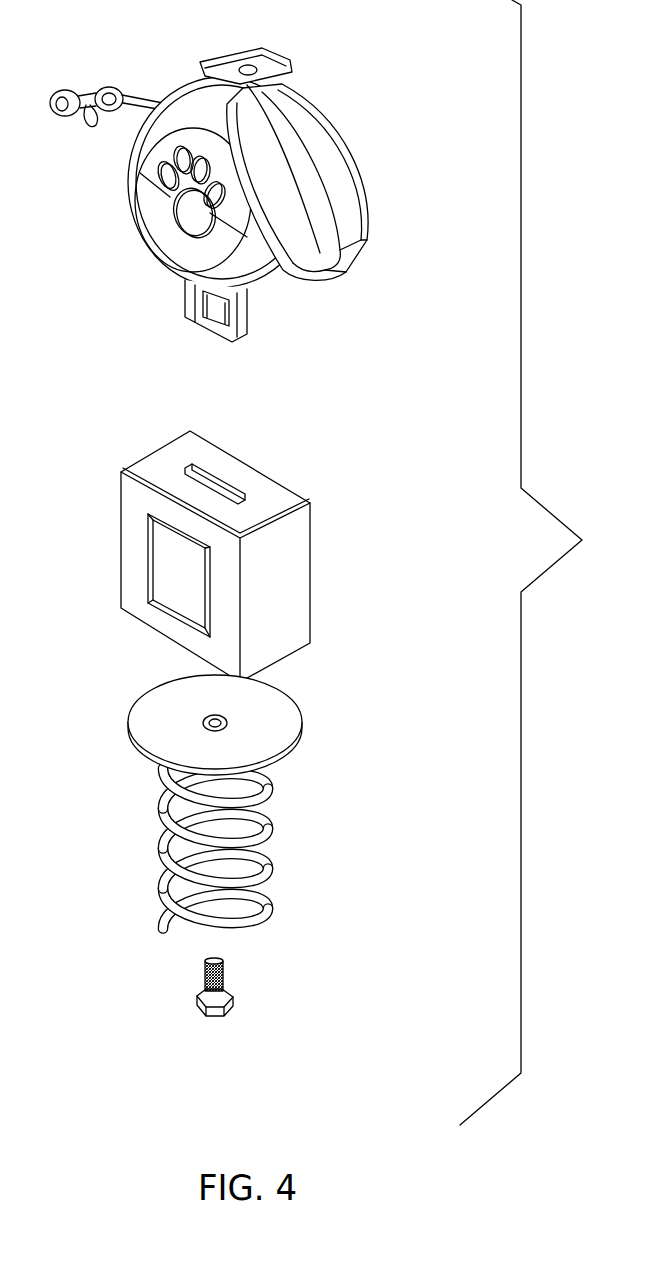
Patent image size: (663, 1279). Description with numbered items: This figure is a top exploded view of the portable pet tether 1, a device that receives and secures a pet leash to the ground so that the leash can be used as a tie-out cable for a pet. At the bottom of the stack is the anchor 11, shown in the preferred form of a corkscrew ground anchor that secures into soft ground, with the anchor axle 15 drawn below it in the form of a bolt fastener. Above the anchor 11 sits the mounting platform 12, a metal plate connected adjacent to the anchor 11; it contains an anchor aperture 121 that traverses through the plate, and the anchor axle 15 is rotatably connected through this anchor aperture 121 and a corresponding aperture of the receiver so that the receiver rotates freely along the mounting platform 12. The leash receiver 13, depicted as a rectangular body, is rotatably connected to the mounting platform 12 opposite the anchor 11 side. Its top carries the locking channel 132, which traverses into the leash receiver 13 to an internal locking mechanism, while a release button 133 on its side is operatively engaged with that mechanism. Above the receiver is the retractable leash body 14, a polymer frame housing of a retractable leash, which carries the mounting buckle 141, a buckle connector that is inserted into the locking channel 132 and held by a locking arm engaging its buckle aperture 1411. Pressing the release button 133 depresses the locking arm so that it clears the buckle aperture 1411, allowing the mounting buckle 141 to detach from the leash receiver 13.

The portable pet tether 1 is at (536, 562).
The anchor 11 is at (293, 827).
The mounting platform 12 is at (128, 750).
The anchor aperture 121 is at (218, 715).
The leash receiver 13 is at (328, 577).
The locking channel 132 is at (218, 482).
The release button 133 is at (125, 575).
The retractable leash body 14 is at (352, 122).
The mounting buckle 141 is at (253, 320).
The buckle aperture 1411 is at (214, 300).
The anchor axle 15 is at (242, 982).